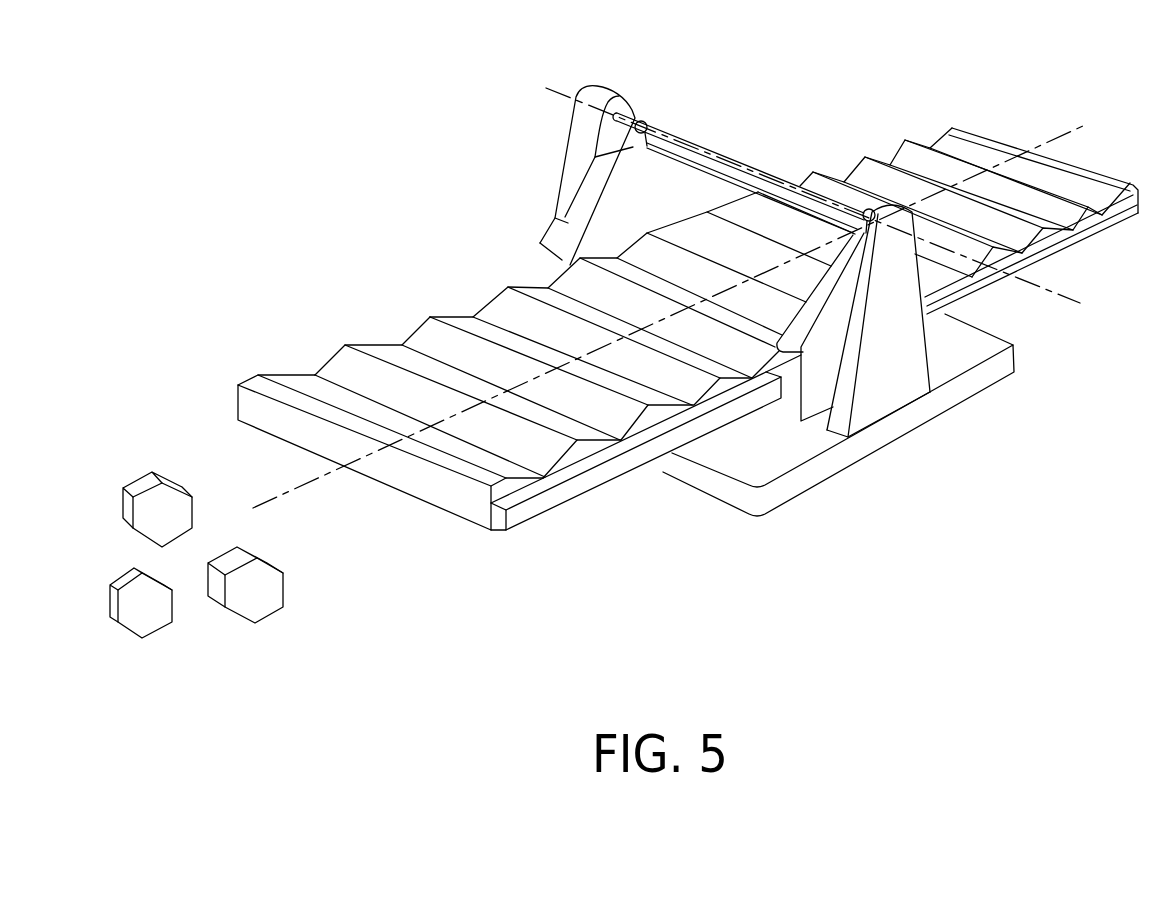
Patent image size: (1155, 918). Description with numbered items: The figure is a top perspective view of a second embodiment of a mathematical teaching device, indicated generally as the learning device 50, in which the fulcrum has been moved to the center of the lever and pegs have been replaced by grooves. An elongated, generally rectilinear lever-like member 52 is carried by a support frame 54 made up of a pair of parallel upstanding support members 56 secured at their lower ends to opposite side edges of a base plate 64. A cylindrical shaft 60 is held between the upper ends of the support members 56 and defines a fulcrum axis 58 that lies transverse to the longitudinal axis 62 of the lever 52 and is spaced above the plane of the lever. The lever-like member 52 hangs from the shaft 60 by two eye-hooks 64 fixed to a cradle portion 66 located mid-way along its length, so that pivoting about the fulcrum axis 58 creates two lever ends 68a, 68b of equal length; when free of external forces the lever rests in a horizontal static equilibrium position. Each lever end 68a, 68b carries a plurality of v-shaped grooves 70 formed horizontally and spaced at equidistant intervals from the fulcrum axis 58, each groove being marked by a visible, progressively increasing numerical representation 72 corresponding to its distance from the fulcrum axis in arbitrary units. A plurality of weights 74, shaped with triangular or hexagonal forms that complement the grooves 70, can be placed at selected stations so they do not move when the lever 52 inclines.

The learning device 50 is at (300, 155).
The lever-like member 52 is at (245, 407).
The support frame 54 is at (1007, 367).
The support members 56 is at (902, 377).
The fulcrum axis 58 is at (1063, 293).
The cylindrical shaft 60 is at (688, 142).
The longitudinal axis 62 is at (1077, 130).
The eye-hooks 64 is at (642, 118).
The cradle portion 66 is at (557, 228).
The lever end 68a is at (424, 338).
The lever end 68b is at (868, 153).
The grooves 70 is at (422, 338).
The numerical representation 72 is at (702, 393).
The weights 74 is at (193, 432).